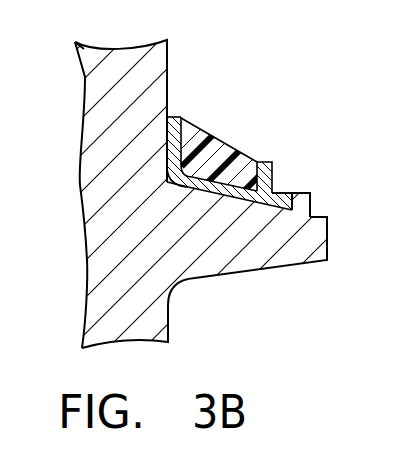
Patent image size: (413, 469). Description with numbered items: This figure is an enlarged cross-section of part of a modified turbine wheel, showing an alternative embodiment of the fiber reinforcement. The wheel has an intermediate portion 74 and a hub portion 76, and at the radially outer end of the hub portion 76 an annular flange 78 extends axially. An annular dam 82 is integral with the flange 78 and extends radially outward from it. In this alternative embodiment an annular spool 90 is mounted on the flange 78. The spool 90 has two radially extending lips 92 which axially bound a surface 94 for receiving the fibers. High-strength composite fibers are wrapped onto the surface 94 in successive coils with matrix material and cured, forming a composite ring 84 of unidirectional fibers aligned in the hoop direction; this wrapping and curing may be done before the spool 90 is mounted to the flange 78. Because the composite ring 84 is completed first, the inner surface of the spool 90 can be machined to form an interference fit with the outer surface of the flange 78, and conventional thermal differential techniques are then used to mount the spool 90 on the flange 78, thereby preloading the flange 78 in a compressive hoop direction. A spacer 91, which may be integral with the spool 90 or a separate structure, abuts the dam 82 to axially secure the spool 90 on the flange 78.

The intermediate portion 74 is at (121, 57).
The hub portion 76 is at (153, 322).
The annular flange 78 is at (312, 248).
The annular dam 82 is at (311, 203).
The composite ring 84 is at (205, 135).
The annular spool 90 is at (224, 193).
The spacer 91 is at (283, 195).
The radially extending lips 92 is at (173, 117).
The surface 94 is at (168, 172).